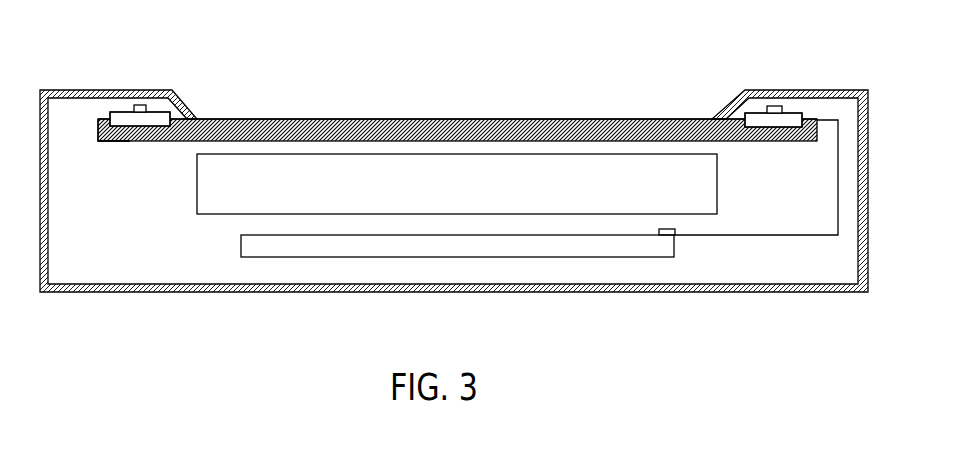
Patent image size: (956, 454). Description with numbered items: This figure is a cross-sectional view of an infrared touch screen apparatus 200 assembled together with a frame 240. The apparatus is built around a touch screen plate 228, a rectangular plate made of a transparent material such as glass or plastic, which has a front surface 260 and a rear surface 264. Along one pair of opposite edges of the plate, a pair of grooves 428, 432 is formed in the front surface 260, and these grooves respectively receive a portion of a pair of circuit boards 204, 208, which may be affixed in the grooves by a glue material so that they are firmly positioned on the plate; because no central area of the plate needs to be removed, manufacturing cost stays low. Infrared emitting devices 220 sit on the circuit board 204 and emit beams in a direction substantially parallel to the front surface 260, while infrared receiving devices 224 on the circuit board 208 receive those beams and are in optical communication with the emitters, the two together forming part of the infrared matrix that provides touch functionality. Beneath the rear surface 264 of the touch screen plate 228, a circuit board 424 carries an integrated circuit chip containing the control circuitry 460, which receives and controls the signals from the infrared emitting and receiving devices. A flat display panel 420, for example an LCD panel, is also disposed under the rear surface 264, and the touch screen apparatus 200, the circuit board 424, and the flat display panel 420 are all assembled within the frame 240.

The infrared touch screen apparatus 200 is at (326, 108).
The circuit board 204 is at (116, 112).
The circuit board 208 is at (748, 113).
The infrared emitting devices 220 is at (145, 105).
The infrared receiving devices 224 is at (774, 106).
The touch screen plate 228 is at (98, 128).
The frame 240 is at (858, 91).
The front surface 260 is at (557, 119).
The rear surface 264 is at (113, 141).
The flat display panel 420 is at (201, 214).
The circuit board 424 is at (593, 257).
The groove 428 is at (109, 120).
The groove 432 is at (738, 123).
The control circuitry 460 is at (676, 230).